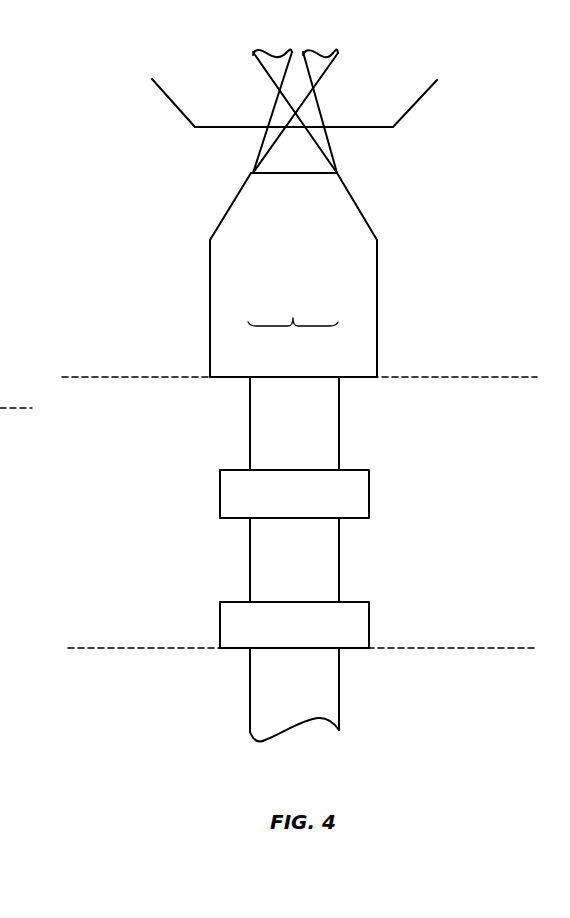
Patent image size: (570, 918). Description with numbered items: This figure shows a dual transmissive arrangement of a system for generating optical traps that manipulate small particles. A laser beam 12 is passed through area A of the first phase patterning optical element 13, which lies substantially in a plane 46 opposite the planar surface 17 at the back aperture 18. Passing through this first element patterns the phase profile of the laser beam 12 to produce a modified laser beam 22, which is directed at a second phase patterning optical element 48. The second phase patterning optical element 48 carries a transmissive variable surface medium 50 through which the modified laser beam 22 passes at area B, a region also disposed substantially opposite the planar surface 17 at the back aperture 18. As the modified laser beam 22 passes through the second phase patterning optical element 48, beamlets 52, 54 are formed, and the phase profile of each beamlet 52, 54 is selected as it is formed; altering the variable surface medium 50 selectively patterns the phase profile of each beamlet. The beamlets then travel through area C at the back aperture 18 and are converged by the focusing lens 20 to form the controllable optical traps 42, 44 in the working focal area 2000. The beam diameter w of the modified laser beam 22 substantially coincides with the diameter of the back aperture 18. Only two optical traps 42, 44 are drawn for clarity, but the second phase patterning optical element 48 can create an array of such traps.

The working focal area 2000 is at (418, 103).
The optical trap 44 is at (262, 76).
The optical trap 42 is at (328, 75).
The focusing lens 20 is at (360, 295).
The back aperture 18 is at (293, 311).
The planar surface 17 is at (488, 377).
The beamlet 52 is at (245, 489).
The beamlet 54 is at (250, 433).
The second phase patterning optical element 48 is at (369, 493).
The transmissive variable surface medium 50 is at (348, 470).
The modified laser beam 22 is at (260, 570).
The first phase patterning optical element 13 is at (369, 625).
The plane 46 is at (488, 648).
The laser beam 12 is at (260, 701).